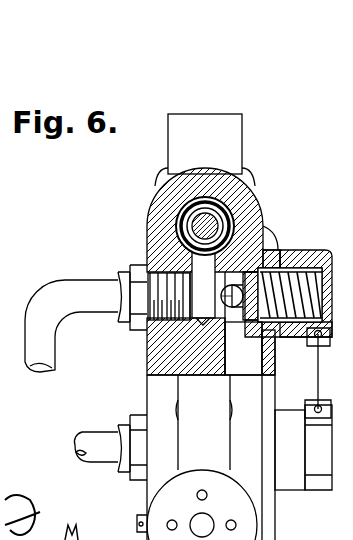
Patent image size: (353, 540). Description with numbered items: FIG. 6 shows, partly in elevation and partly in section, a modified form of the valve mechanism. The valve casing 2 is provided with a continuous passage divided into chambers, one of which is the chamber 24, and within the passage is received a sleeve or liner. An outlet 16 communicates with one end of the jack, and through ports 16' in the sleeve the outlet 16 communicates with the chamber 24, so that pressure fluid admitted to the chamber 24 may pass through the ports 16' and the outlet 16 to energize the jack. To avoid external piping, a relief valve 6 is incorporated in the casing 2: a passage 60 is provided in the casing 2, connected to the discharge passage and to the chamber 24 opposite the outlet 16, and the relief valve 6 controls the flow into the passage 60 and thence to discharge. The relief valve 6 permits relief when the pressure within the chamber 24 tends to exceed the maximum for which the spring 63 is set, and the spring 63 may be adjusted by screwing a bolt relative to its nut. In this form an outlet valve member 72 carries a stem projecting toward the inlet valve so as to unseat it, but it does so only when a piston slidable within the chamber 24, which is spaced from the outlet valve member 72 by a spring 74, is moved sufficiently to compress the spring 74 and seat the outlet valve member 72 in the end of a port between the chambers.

The valve casing 2 is at (258, 500).
The relief valve 6 is at (276, 262).
The outlet 16 is at (96, 469).
The ports 16' is at (71, 313).
The chamber 24 is at (238, 206).
The passage 60 is at (252, 357).
The spring 63 is at (300, 266).
The outlet valve member 72 is at (180, 233).
The spring 74 is at (187, 206).